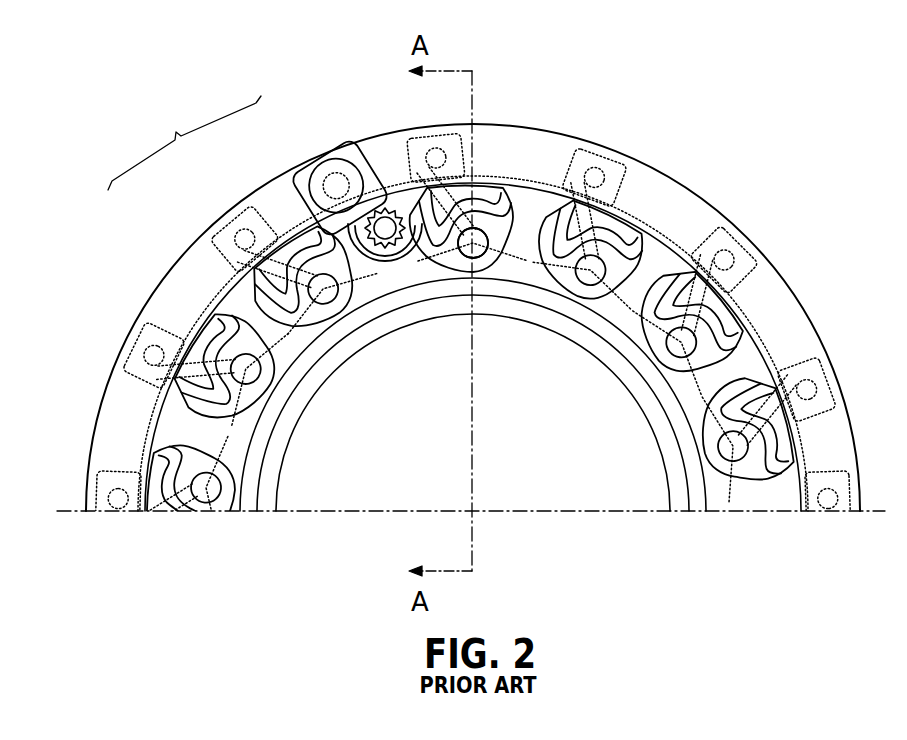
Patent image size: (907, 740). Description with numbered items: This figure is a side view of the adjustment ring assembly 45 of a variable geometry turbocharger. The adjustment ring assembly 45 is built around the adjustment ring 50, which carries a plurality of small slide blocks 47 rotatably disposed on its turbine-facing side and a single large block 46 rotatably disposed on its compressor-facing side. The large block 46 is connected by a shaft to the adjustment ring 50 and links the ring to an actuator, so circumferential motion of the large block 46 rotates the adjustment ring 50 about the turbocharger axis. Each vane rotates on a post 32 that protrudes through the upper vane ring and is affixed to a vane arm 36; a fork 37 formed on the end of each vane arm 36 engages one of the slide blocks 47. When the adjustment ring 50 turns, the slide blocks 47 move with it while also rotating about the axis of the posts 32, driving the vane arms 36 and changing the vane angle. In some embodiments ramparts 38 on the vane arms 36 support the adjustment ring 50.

The post 32 is at (585, 268).
The vane arm 36 is at (483, 296).
The fork 37 is at (481, 160).
The rampart 38 is at (500, 230).
The adjustment ring assembly 45 is at (176, 134).
The large block 46 is at (290, 190).
The slide block 47 is at (231, 248).
The adjustment ring 50 is at (183, 272).